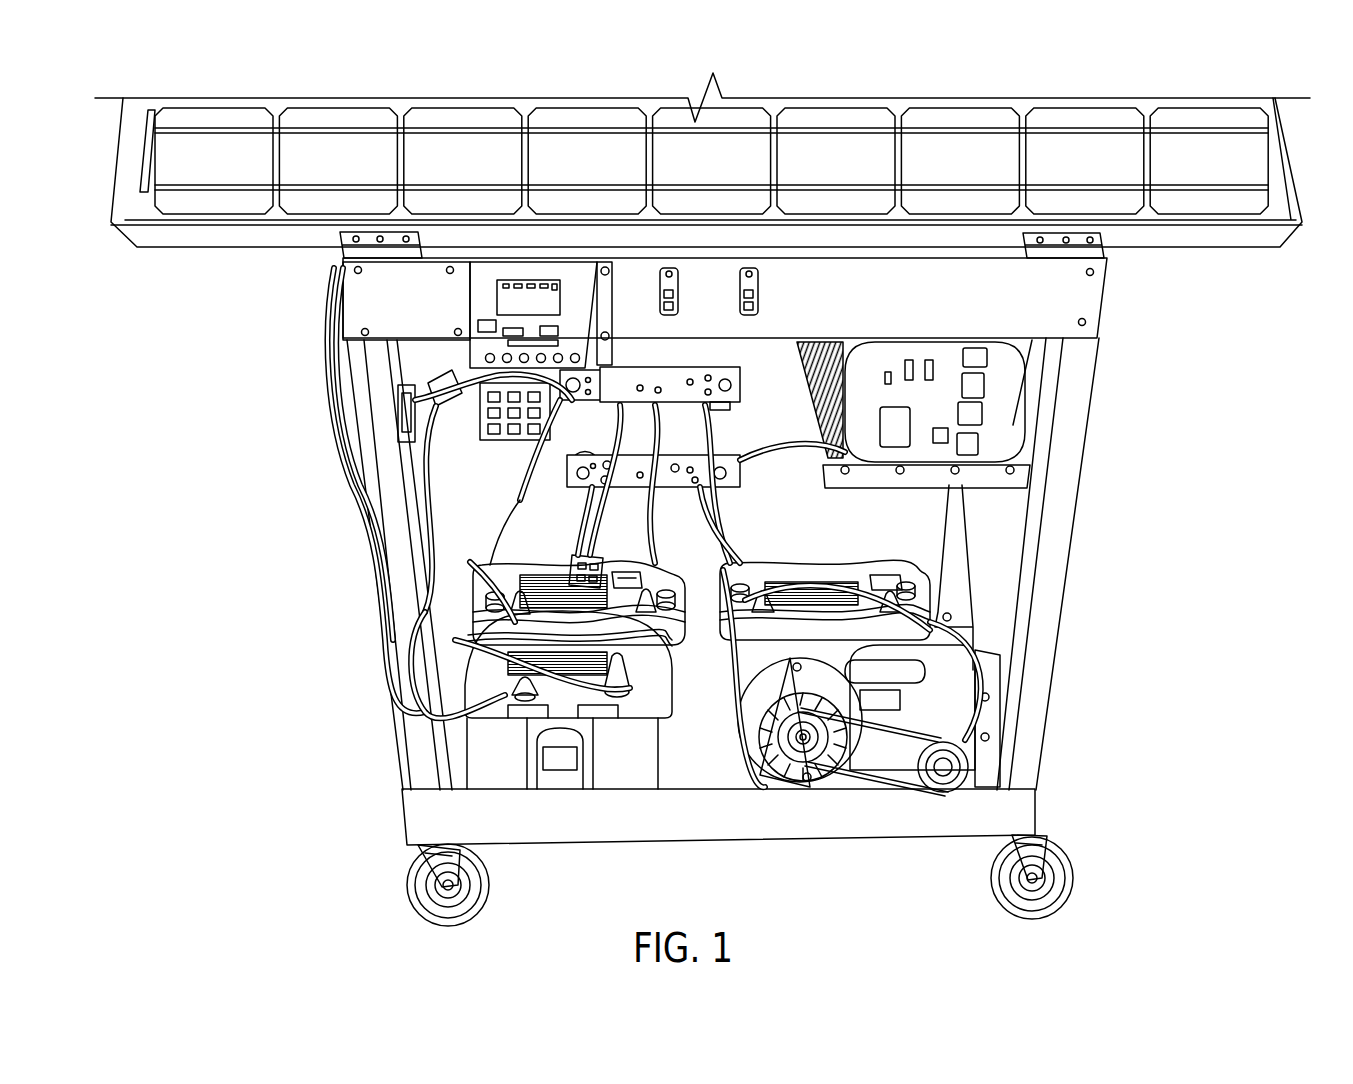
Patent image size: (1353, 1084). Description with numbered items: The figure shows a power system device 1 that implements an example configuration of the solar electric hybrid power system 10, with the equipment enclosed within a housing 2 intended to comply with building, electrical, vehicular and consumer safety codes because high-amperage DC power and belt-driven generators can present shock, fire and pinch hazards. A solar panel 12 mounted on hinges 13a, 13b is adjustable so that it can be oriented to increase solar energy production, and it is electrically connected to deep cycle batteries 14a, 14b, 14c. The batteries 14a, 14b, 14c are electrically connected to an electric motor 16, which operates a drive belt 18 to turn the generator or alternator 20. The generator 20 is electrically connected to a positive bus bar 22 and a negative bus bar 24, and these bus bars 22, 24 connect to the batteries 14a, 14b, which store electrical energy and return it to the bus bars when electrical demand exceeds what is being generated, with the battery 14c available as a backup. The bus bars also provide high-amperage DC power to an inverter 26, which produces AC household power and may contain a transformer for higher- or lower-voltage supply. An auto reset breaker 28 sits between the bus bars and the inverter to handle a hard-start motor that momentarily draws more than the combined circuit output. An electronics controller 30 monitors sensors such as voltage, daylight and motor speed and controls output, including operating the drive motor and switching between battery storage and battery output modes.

The power system device 1 is at (1224, 84).
The housing 2 is at (1067, 575).
The solar electric hybrid power system 10 is at (1116, 406).
The solar panel 12 is at (585, 103).
The hinge 13a is at (341, 263).
The hinge 13b is at (1105, 265).
The deep cycle battery 14a is at (468, 688).
The deep cycle battery 14b is at (477, 558).
The deep cycle battery 14c is at (885, 545).
The electric motor 16 is at (975, 691).
The drive belt 18 is at (858, 790).
The generator or alternator 20 is at (752, 780).
The positive bus bar 22 is at (735, 395).
The negative bus bar 24 is at (738, 485).
The inverter 26 is at (1012, 427).
The auto reset breaker 28 is at (480, 420).
The electronics controller 30 is at (520, 280).